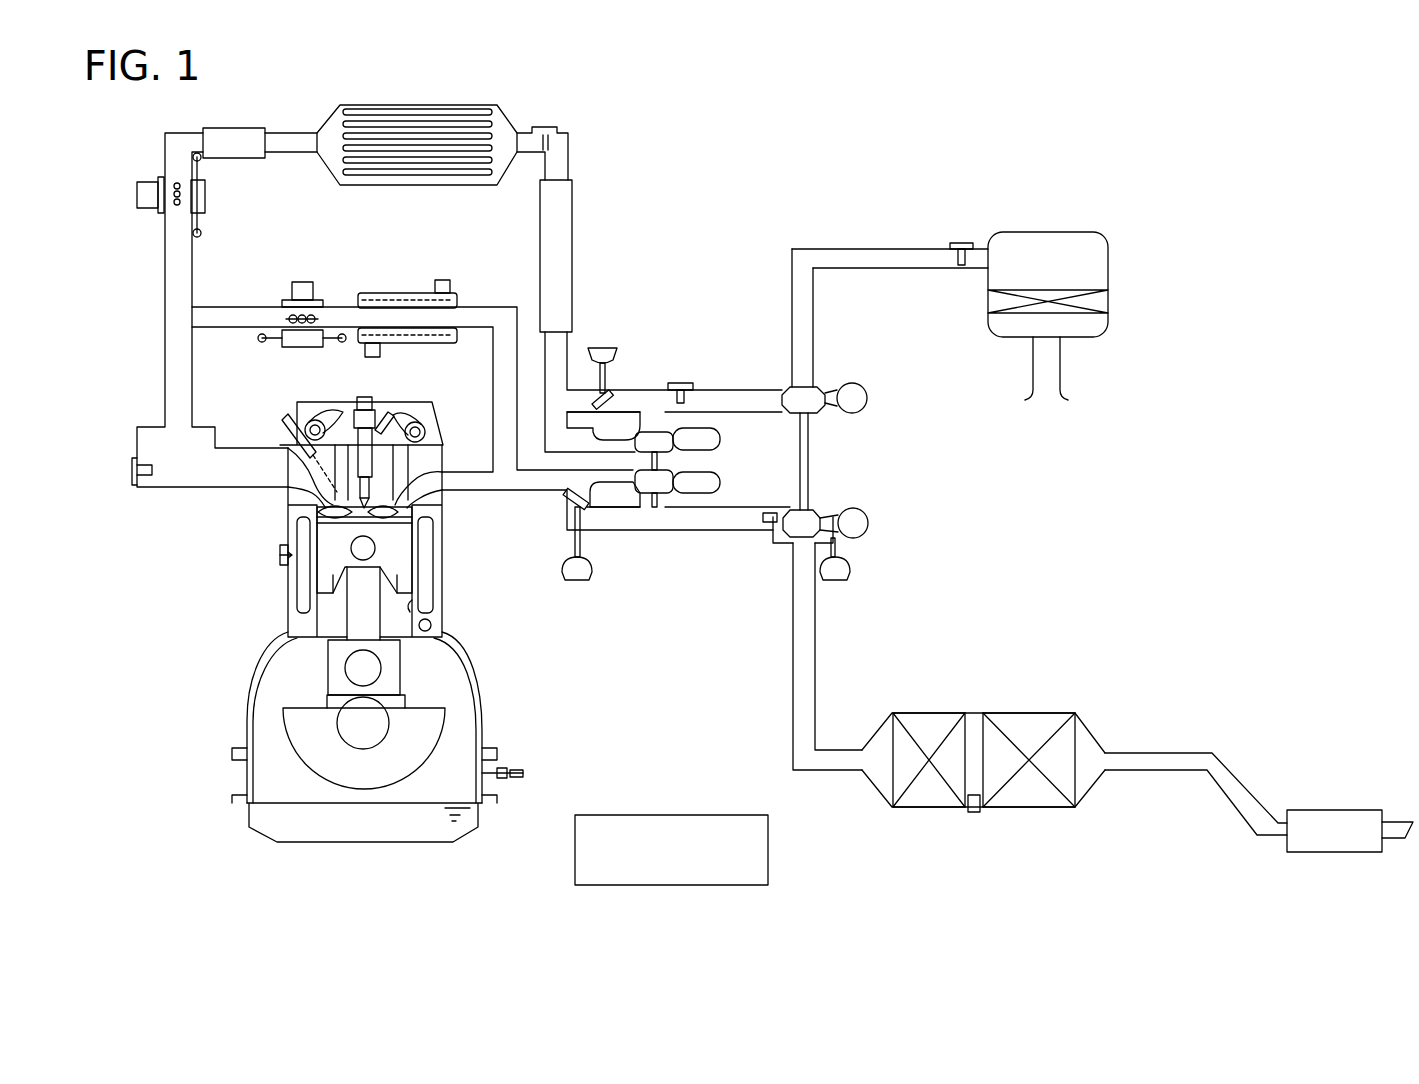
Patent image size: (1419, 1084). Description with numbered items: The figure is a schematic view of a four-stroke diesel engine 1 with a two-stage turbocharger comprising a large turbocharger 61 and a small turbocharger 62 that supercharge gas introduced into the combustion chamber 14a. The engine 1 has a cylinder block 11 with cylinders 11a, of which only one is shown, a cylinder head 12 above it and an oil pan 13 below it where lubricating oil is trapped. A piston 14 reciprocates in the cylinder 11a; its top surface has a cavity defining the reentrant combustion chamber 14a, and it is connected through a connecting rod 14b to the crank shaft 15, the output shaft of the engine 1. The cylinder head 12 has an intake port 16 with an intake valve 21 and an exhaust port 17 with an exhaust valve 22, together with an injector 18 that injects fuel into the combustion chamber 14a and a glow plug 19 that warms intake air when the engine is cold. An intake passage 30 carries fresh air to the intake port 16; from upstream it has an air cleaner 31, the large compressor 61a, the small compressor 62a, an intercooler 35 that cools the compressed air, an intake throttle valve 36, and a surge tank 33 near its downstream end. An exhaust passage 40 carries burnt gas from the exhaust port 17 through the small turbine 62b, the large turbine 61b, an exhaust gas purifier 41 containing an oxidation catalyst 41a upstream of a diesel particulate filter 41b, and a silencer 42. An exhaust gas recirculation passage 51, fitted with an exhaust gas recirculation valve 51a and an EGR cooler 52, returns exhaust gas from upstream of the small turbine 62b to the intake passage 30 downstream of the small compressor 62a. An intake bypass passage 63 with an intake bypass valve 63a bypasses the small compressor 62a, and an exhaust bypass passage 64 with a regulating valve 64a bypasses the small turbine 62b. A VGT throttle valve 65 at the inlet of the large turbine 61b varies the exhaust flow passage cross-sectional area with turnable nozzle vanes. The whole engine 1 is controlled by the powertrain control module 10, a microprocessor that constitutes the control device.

The engine 1 is at (168, 818).
The powertrain control module 10 is at (615, 900).
The cylinder block 11 is at (445, 570).
The cylinder 11a is at (428, 618).
The cylinder head 12 is at (445, 450).
The oil pan 13 is at (377, 845).
The piston 14 is at (320, 600).
The combustion chamber 14a is at (385, 520).
The connecting rod 14b is at (345, 605).
The crank shaft 15 is at (350, 750).
The intake port 16 is at (298, 478).
The exhaust port 17 is at (410, 474).
The injector 18 is at (365, 398).
The glow plug 19 is at (300, 417).
The intake valve 21 is at (325, 512).
The exhaust valve 22 is at (420, 500).
The intake passage 30 is at (165, 348).
The air cleaner 31 is at (1070, 233).
The surge tank 33 is at (162, 490).
The intercooler 35 is at (415, 105).
The intake throttle valve 36 is at (173, 185).
The exhaust passage 40 is at (793, 700).
The exhaust gas purifier 41 is at (1058, 652).
The oxidation catalyst 41a is at (940, 725).
The diesel particulate filter 41b is at (1030, 725).
The silencer 42 is at (1345, 808).
The exhaust gas recirculation passage 51 is at (412, 336).
The exhaust gas recirculation valve 51a is at (318, 316).
The EGR cooler 52 is at (405, 298).
The large turbocharger 61 is at (958, 415).
The large compressor 61a is at (868, 418).
The large turbine 61b is at (860, 490).
The small turbocharger 62 is at (697, 213).
The small compressor 62a is at (663, 445).
The small turbine 62b is at (700, 475).
The intake bypass passage 63 is at (638, 390).
The intake bypass valve 63a is at (608, 393).
The exhaust bypass passage 64 is at (607, 523).
The regulating valve 64a is at (563, 508).
The VGT throttle valve 65 is at (752, 522).